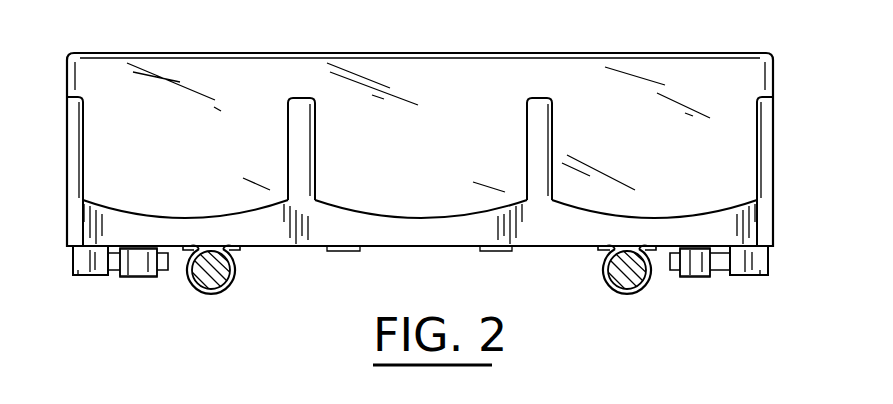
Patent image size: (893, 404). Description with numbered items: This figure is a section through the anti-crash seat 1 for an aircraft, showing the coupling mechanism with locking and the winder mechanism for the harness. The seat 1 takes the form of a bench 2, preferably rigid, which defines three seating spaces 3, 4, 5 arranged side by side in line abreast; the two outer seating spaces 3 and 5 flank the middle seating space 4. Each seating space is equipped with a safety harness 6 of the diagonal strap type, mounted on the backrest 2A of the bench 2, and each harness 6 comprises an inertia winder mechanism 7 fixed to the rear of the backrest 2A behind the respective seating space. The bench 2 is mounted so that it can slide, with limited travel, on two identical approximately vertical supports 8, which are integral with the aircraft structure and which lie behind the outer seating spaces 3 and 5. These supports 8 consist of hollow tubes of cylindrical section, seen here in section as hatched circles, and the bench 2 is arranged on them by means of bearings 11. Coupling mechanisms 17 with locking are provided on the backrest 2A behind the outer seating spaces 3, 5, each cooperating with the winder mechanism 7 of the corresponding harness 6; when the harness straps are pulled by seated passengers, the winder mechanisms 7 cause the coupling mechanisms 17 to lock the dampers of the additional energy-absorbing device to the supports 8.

The anti-crash seat 1 is at (268, 49).
The bench 2 is at (489, 111).
The backrest 2A is at (425, 247).
The seating space 3 is at (192, 167).
The seating space 4 is at (431, 167).
The seating space 5 is at (658, 167).
The safety harness 6 is at (150, 283).
The inertia winder mechanism 7 is at (133, 278).
The vertical support 8 is at (209, 285).
The bearing 11 is at (236, 280).
The coupling mechanism 17 is at (92, 279).